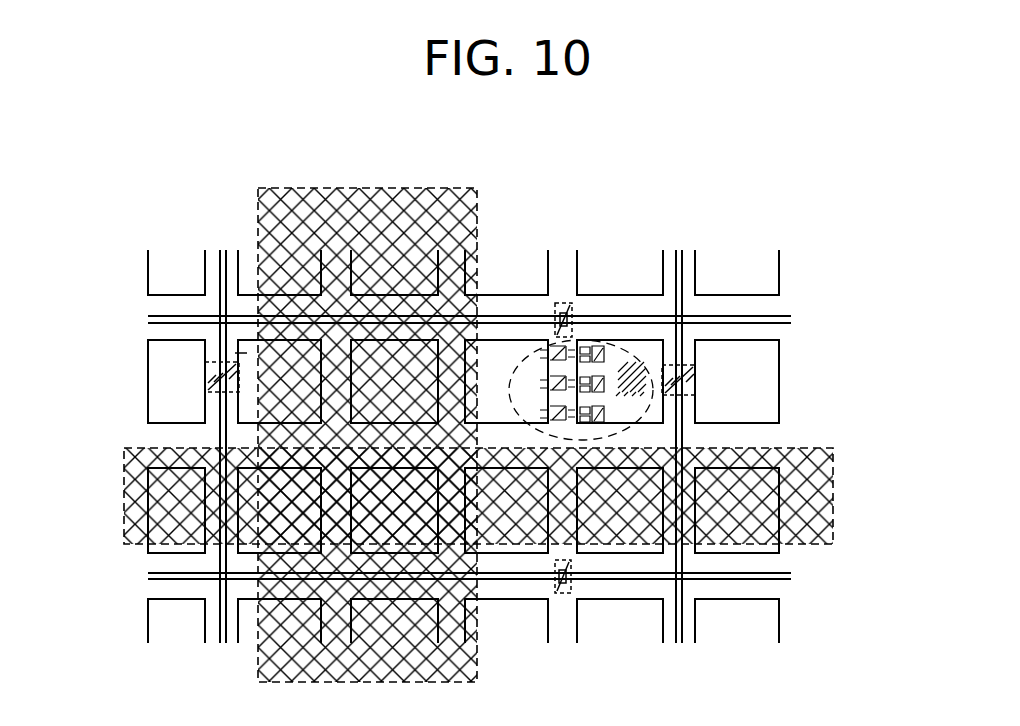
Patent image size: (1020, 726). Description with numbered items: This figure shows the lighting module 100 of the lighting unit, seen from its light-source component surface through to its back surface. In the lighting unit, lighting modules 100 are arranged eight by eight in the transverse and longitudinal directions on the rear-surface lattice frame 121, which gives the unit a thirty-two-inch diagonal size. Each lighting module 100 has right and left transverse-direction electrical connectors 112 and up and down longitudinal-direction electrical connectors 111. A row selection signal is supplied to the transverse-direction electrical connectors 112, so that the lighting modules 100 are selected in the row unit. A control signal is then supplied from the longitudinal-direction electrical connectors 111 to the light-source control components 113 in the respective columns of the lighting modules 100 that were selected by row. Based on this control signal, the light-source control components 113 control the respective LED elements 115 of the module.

The lighting module 100 is at (250, 328).
The rear-surface lattice frame 121 is at (341, 201).
The longitudinal-direction electrical connector 111 is at (562, 302).
The transverse-direction electrical connector 112 is at (203, 377).
The light-source control component 113 is at (636, 356).
The LED element 115 is at (235, 353).